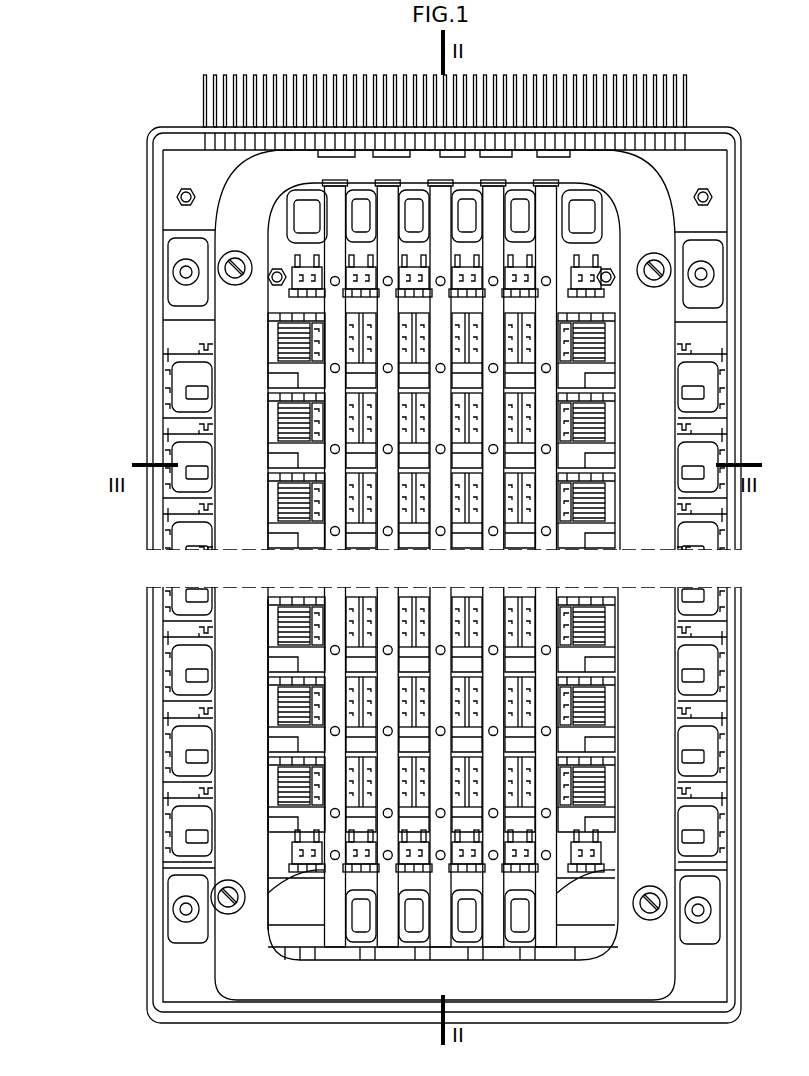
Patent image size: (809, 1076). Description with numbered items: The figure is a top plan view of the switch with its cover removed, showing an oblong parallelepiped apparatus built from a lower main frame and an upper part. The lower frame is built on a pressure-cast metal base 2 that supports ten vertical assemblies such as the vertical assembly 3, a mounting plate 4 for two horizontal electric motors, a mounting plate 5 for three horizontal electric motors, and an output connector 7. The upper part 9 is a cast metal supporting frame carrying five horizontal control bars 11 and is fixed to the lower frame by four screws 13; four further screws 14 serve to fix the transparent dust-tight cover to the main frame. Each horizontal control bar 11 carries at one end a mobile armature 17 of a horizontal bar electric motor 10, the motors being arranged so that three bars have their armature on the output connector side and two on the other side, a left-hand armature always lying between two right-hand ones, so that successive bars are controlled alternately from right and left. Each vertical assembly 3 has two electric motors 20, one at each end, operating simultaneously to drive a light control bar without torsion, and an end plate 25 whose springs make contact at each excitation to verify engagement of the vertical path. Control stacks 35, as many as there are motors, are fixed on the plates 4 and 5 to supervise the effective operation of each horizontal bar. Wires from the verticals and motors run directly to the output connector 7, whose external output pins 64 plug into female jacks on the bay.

The metal base 2 is at (182, 976).
The vertical assembly 3 is at (295, 700).
The mounting plate for two horizontal electric motors 4 is at (577, 918).
The mounting plate for three horizontal electric motors 5 is at (615, 222).
The output connector 7 is at (622, 137).
The upper part 9 is at (232, 839).
The horizontal bar electric motor 10 is at (292, 211).
The horizontal control bar 11 is at (330, 193).
The screw 13 is at (220, 917).
The screw 14 is at (697, 927).
The mobile armature 17 is at (423, 208).
The electric motor 20 is at (183, 750).
The end plate 25 is at (600, 795).
The control stack 35 is at (298, 302).
The output pin 64 is at (650, 80).